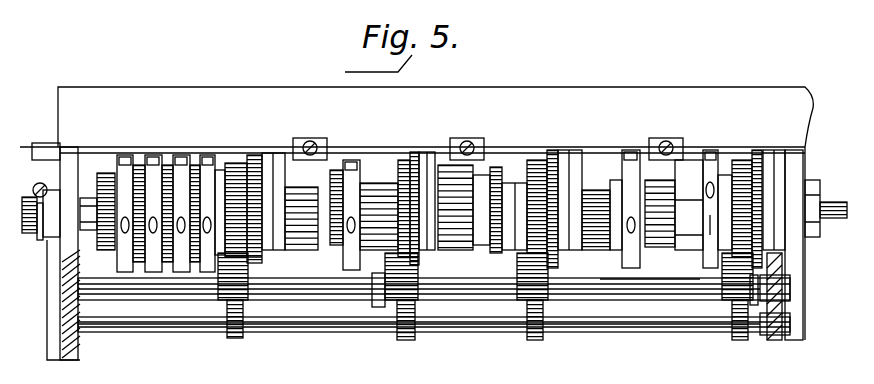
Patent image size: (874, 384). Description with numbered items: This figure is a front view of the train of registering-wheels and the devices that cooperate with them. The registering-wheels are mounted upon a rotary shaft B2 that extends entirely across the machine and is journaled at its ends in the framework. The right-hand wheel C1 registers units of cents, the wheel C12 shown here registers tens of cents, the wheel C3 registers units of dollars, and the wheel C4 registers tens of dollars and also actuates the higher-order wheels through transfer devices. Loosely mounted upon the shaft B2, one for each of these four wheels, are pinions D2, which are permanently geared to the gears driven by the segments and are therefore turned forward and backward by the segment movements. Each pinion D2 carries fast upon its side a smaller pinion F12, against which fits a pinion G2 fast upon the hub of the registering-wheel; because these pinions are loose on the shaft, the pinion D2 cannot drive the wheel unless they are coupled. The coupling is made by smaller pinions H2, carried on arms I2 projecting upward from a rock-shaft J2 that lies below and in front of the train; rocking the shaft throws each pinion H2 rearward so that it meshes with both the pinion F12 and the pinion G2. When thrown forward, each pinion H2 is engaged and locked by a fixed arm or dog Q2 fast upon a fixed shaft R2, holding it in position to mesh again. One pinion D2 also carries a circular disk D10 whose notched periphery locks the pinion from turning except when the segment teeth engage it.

The registering-wheel C4 is at (211, 152).
The registering-wheel C3 is at (352, 158).
The number wheel C12 is at (630, 150).
The registering-wheel C1 is at (712, 150).
The pinion G2 is at (236, 162).
The gear F12 is at (254, 155).
The pinion D2 is at (270, 152).
The rotary shaft B2 is at (834, 202).
The circular disk D10 is at (263, 254).
The pinion H2 is at (230, 305).
The locking arm or dog Q2 is at (238, 340).
The arm I2 is at (180, 300).
The fixed shaft R2 is at (335, 326).
The rock-shaft J2 is at (647, 285).